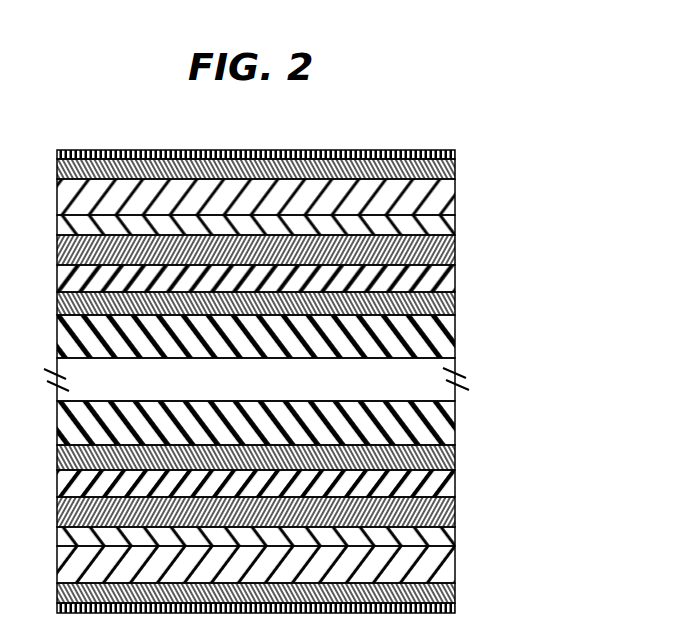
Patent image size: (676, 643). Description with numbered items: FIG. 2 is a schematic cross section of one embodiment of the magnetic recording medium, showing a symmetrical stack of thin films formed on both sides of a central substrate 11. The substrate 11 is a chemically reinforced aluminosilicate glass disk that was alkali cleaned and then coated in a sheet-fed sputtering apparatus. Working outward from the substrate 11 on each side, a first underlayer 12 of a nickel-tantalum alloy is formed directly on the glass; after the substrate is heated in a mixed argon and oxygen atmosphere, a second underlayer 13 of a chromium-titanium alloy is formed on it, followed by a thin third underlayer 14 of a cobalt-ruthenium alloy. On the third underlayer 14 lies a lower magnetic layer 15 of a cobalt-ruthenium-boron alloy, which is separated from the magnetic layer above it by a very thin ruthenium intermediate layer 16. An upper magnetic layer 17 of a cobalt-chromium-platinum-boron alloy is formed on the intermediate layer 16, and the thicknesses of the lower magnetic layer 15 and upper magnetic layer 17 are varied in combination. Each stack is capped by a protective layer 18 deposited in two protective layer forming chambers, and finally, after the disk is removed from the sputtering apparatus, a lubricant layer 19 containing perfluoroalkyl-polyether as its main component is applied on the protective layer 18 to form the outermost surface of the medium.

The substrate 11 is at (456, 365).
The first underlayer 12 is at (456, 336).
The second underlayer 13 is at (456, 303).
The third underlayer 14 is at (456, 278).
The lower magnetic layer 15 is at (456, 250).
The intermediate layer 16 is at (456, 225).
The upper magnetic layer 17 is at (456, 196).
The protective layer 18 is at (456, 170).
The lubricant layer 19 is at (456, 152).